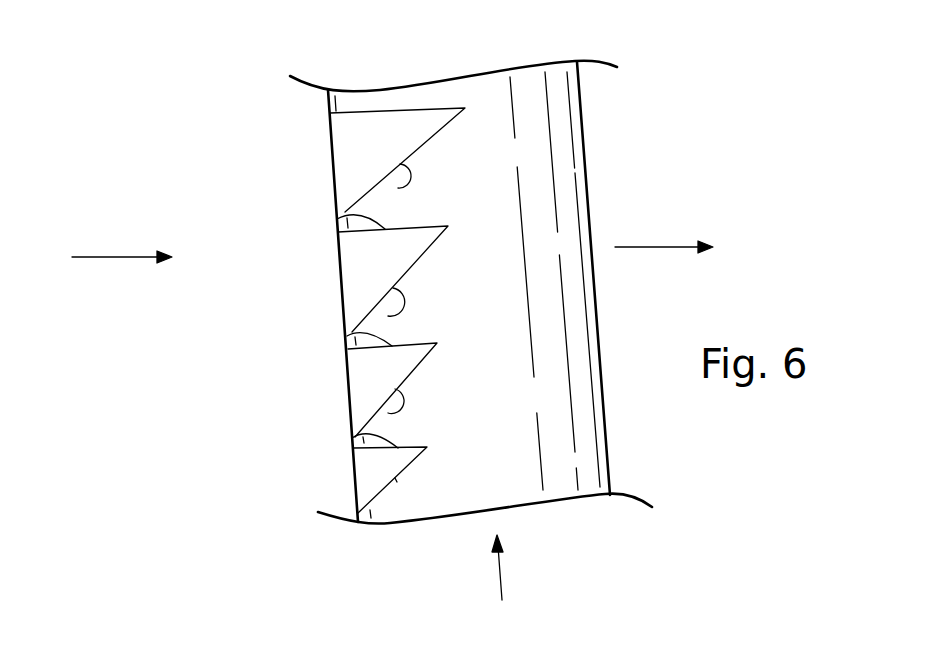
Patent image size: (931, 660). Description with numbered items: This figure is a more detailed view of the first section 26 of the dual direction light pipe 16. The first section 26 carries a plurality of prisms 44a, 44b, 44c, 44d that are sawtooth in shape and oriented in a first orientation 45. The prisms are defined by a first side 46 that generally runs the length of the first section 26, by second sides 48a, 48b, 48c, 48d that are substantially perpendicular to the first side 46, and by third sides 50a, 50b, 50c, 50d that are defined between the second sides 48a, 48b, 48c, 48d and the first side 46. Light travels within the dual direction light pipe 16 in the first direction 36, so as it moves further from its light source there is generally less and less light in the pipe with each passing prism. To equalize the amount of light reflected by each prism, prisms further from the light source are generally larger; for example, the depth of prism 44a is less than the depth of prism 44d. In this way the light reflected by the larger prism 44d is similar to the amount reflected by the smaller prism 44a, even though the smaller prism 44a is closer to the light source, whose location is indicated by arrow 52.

The dual direction light pipe 16 is at (592, 110).
The first section 26 is at (587, 178).
The first direction 36 is at (643, 247).
The first orientation 45 is at (102, 257).
The first side 46 is at (329, 100).
The arrow indicating light source direction 52 is at (504, 584).
The prism 44a is at (357, 487).
The prism 44b is at (347, 387).
The prism 44c is at (340, 280).
The prism 44d is at (331, 156).
The second side 48a is at (355, 437).
The second side 48b is at (352, 332).
The second side 48c is at (343, 213).
The second side 48d is at (394, 111).
The third side 50a is at (395, 478).
The third side 50b is at (388, 413).
The third side 50c is at (388, 316).
The third side 50d is at (398, 188).